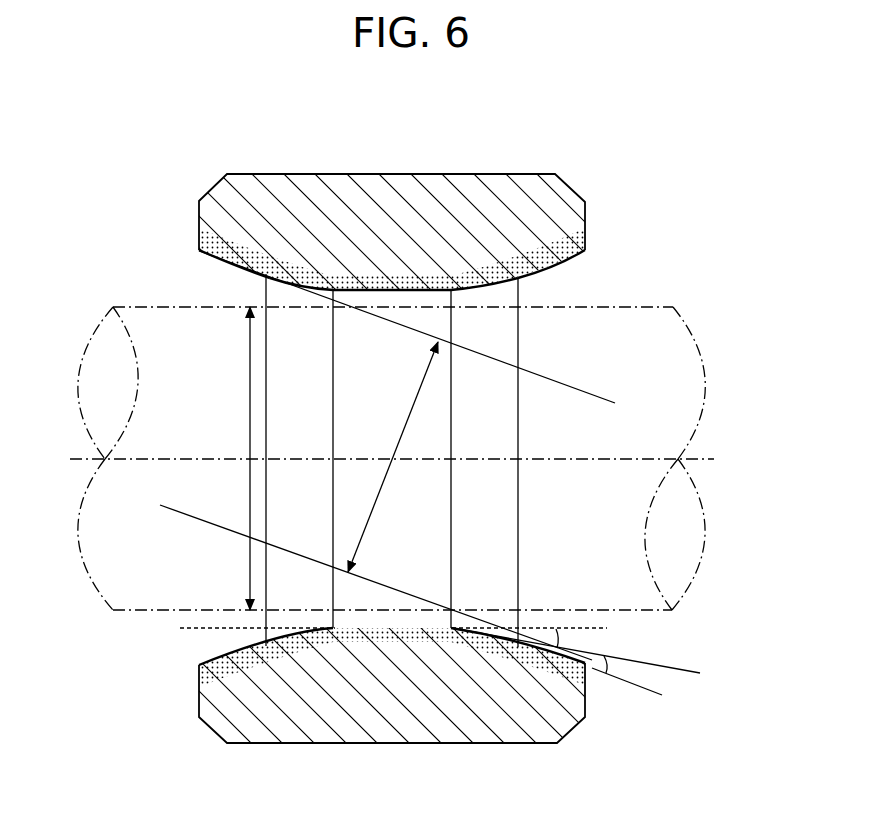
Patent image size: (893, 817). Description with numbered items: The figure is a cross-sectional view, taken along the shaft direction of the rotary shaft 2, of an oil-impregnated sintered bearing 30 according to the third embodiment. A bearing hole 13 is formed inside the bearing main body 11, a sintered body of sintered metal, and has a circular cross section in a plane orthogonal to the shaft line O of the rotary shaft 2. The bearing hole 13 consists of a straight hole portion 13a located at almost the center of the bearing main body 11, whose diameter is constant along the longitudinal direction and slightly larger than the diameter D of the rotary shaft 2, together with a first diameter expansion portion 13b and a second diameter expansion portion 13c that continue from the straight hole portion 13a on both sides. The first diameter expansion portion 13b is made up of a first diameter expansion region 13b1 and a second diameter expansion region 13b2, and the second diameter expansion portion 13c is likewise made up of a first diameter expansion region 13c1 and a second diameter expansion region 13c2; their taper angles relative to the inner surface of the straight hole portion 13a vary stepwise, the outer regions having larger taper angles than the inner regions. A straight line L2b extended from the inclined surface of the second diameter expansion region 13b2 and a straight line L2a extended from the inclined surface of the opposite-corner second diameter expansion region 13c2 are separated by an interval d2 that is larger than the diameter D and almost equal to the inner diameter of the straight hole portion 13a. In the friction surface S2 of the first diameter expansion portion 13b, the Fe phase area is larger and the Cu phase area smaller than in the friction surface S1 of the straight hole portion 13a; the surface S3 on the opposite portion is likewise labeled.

The bearing 30 is at (652, 164).
The rotary shaft 2 is at (662, 306).
The bearing main body 11 is at (498, 188).
The bearing hole 13 is at (540, 484).
The straight hole portion 13a is at (377, 292).
The first diameter expansion portion 13b is at (533, 630).
The first diameter expansion region 13b1 is at (494, 286).
The second diameter expansion region 13b2 is at (556, 255).
The second diameter expansion portion 13c is at (220, 646).
The first diameter expansion region 13c1 is at (307, 292).
The second diameter expansion region 13c2 is at (212, 258).
The diameter of the rotary shaft D is at (239, 458).
The interval d2 is at (393, 457).
The straight line L2a is at (570, 385).
The straight line L2b is at (223, 526).
The shaft line O is at (404, 460).
The friction surface S1 is at (402, 626).
The friction surface S2 is at (588, 649).
The tapered surface plane S3 is at (205, 655).